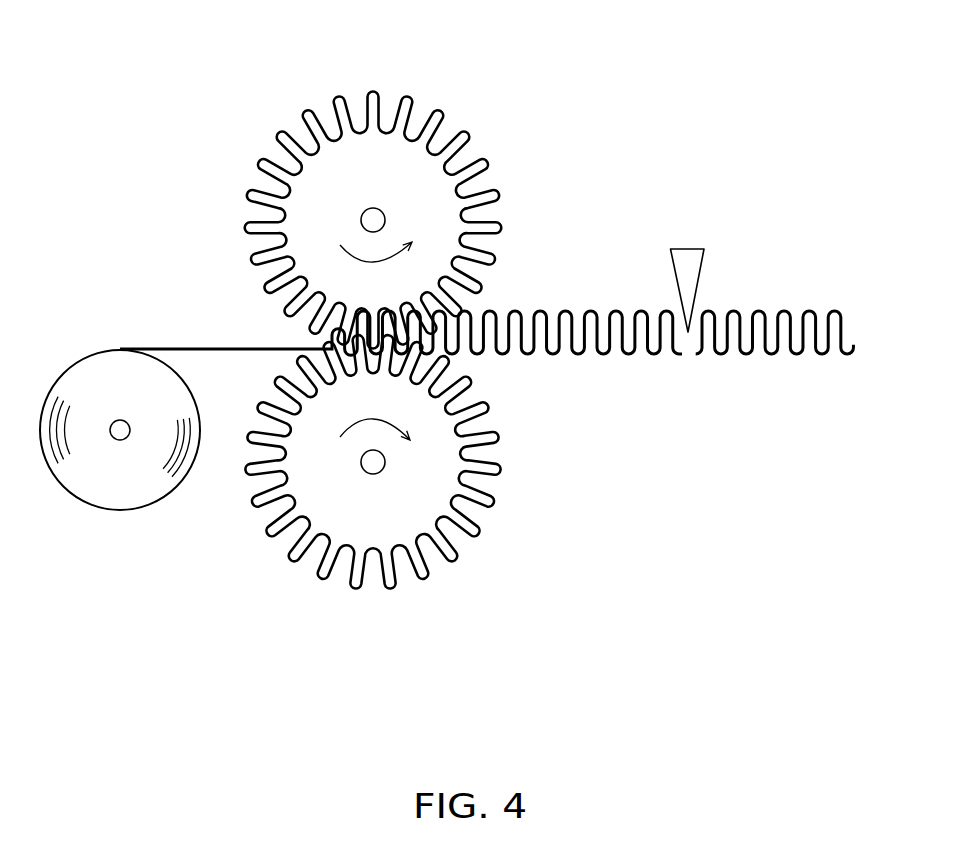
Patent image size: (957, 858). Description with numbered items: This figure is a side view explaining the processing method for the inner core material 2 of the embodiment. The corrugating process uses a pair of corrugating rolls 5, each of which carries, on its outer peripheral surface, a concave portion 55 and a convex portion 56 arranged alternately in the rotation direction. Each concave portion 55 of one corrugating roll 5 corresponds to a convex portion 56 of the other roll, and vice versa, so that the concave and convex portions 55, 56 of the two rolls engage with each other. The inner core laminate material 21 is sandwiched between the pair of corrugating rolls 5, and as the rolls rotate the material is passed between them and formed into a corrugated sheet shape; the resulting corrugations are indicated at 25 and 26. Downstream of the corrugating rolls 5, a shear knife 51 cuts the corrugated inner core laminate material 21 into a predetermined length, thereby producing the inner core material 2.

The inner core material 2 is at (826, 312).
The corrugating roll 5 is at (372, 349).
The inner core laminate material 21 is at (426, 316).
The bottom portion (valley) 25 is at (577, 356).
The top portion (ridge) 26 is at (458, 316).
The shear knife 51 is at (688, 258).
The concave portion 55 is at (387, 130).
The convex portion 56 is at (372, 349).